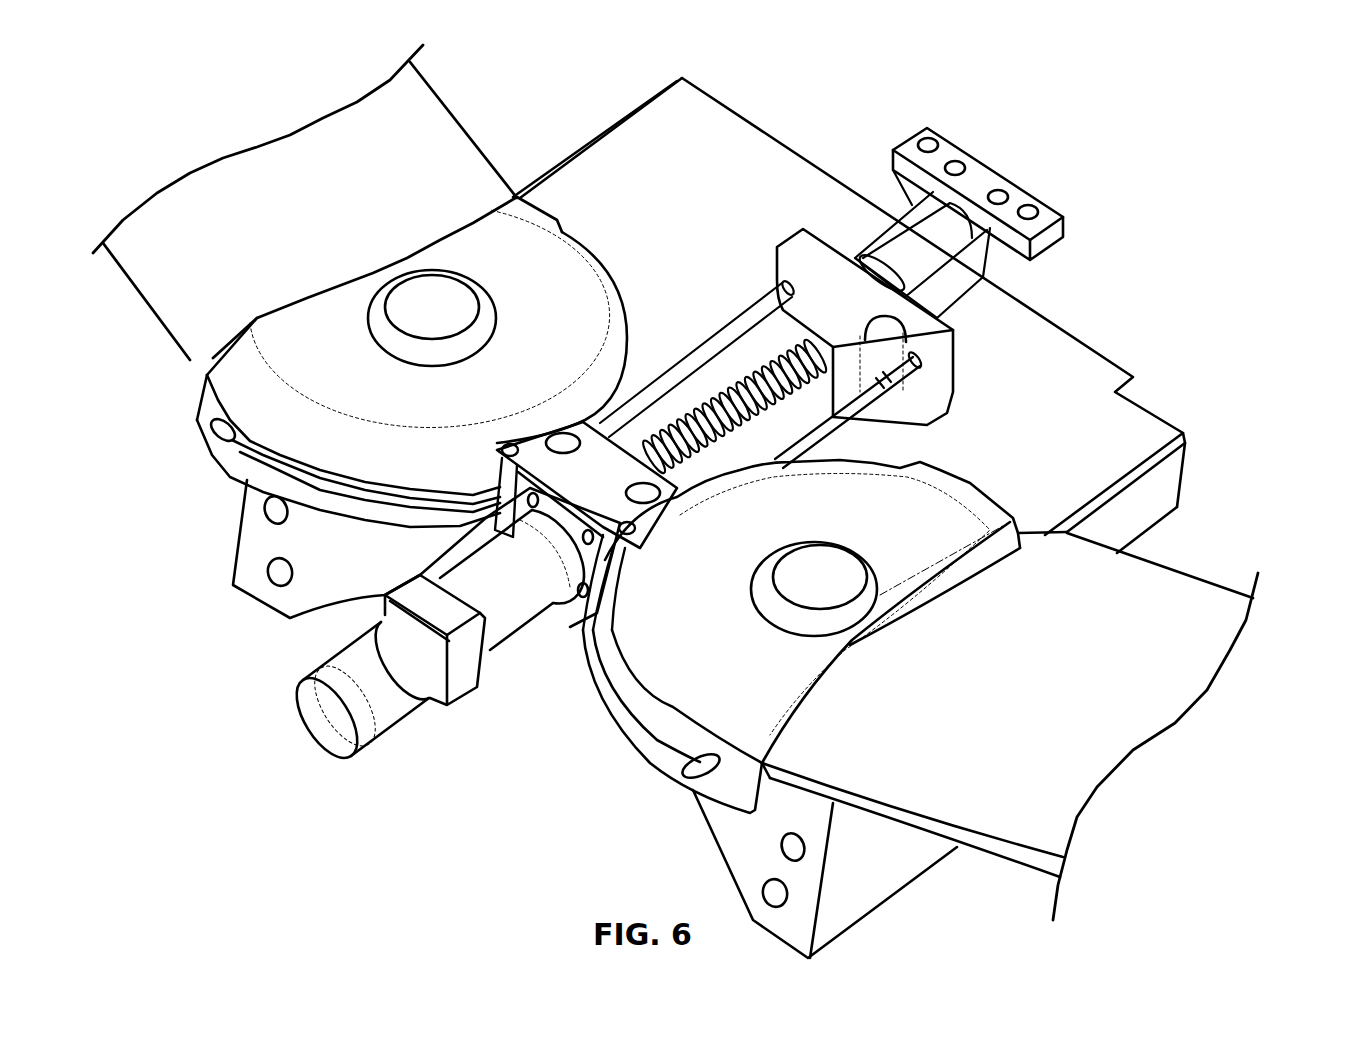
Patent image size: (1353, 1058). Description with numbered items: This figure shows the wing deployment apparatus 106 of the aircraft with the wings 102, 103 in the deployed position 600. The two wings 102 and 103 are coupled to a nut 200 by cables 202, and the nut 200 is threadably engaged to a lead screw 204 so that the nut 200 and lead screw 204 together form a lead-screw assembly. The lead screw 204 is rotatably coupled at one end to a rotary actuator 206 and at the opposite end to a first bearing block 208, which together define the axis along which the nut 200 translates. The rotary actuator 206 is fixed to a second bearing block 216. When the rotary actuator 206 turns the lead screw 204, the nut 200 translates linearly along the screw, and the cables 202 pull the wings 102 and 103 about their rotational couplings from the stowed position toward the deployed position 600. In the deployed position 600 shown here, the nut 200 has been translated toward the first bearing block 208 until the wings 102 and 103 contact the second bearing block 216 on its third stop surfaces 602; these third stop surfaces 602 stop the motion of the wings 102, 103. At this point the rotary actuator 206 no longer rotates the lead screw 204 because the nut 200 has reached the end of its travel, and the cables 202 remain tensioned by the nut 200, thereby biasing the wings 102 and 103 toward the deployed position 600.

The deployed position 600 is at (213, 133).
The wing 102 is at (197, 350).
The wing 103 is at (1018, 835).
The wing deployment apparatus 106 is at (207, 568).
The nut 200 is at (800, 243).
The cable 202 is at (673, 370).
The lead screw 204 is at (748, 377).
The rotary actuator 206 is at (333, 658).
The first bearing block 208 is at (983, 175).
The second bearing block 216 is at (585, 418).
The third stop surface 602 is at (485, 462).